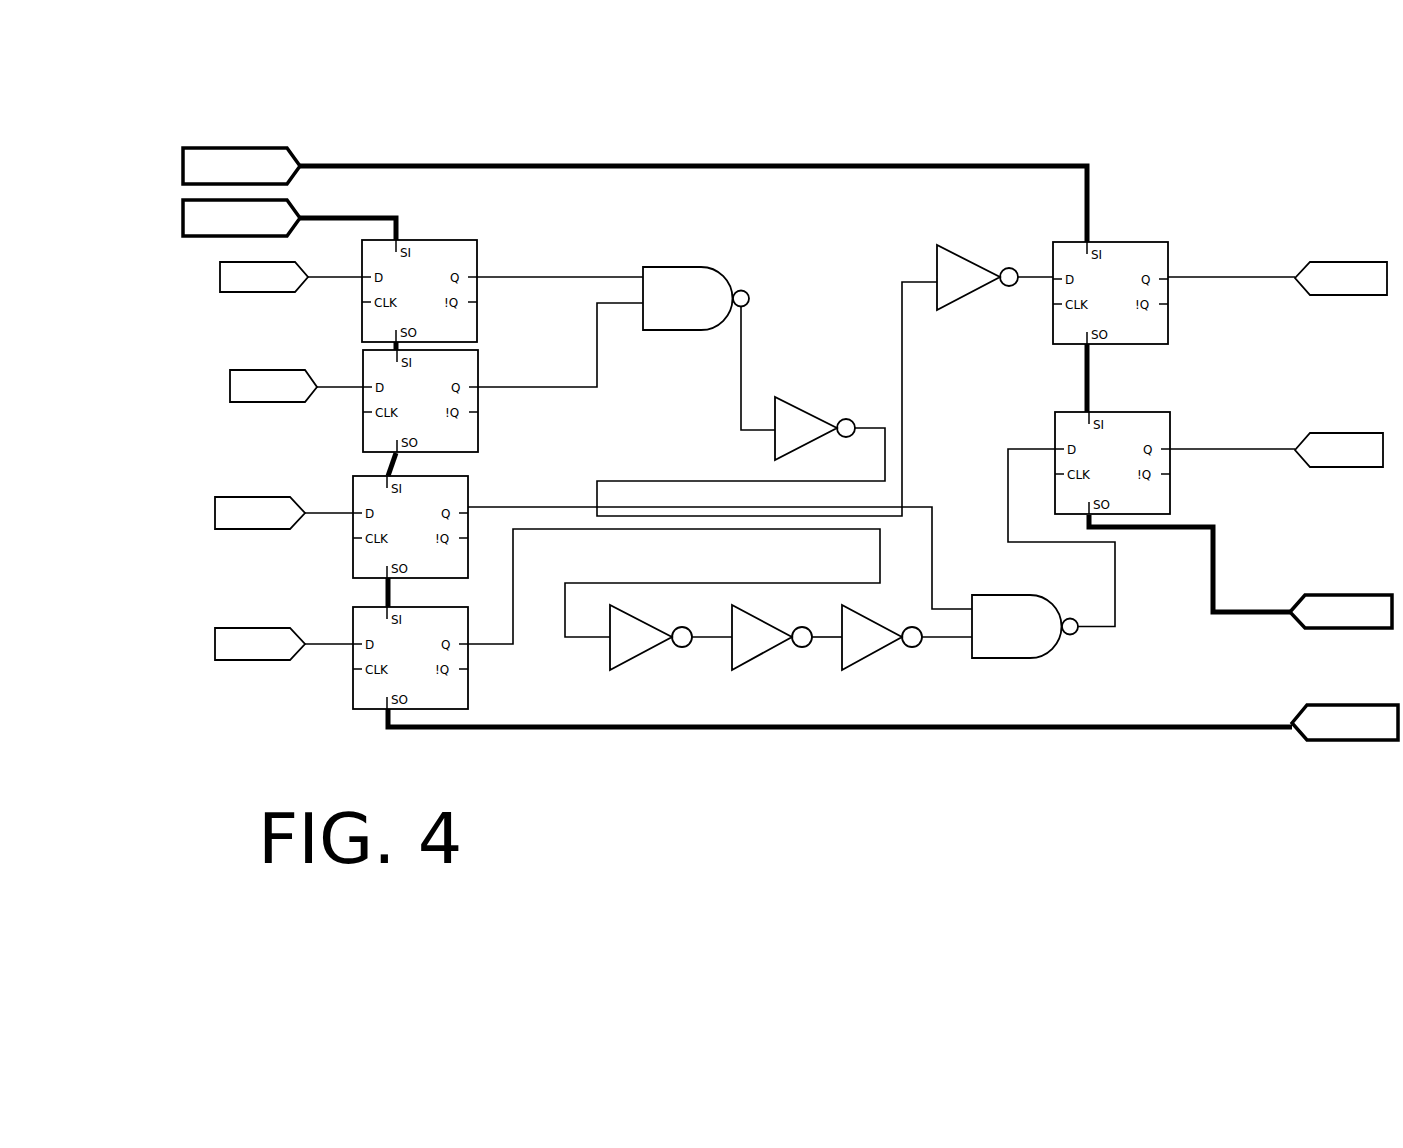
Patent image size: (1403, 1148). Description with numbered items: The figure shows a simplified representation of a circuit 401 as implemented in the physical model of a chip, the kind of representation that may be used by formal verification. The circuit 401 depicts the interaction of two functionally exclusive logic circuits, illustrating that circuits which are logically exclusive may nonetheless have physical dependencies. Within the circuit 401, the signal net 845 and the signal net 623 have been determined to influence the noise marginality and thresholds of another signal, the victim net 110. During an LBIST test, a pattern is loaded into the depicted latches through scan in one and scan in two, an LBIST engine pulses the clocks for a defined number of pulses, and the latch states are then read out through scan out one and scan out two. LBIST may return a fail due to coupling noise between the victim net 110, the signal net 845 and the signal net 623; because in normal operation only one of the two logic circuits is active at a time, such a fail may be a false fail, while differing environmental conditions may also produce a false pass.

The circuit 401 is at (1162, 135).
The victim NET110 110 is at (767, 399).
The signal NET845 845 is at (720, 548).
The signal NET623 623 is at (674, 586).